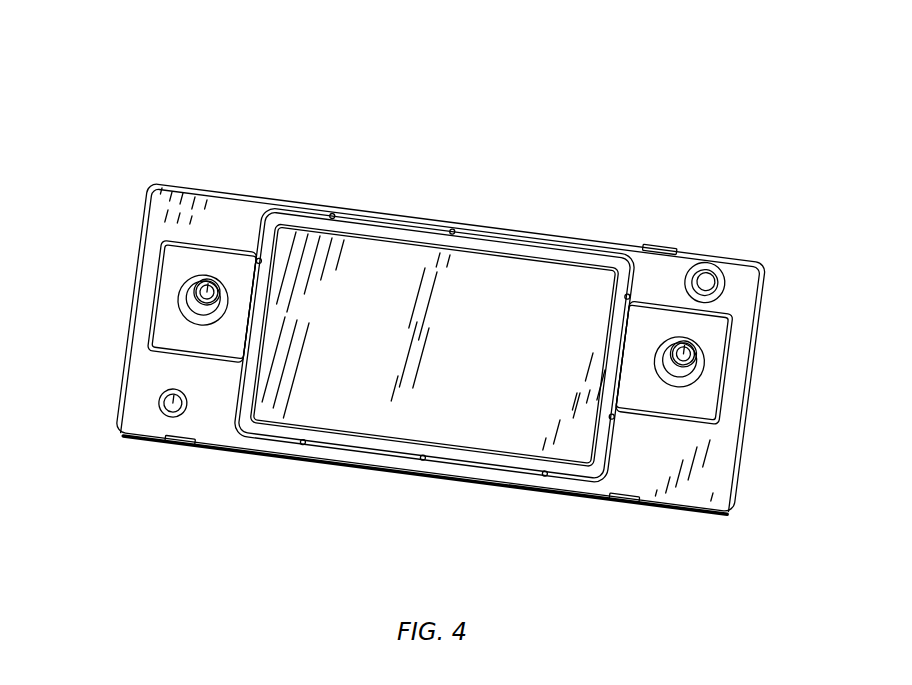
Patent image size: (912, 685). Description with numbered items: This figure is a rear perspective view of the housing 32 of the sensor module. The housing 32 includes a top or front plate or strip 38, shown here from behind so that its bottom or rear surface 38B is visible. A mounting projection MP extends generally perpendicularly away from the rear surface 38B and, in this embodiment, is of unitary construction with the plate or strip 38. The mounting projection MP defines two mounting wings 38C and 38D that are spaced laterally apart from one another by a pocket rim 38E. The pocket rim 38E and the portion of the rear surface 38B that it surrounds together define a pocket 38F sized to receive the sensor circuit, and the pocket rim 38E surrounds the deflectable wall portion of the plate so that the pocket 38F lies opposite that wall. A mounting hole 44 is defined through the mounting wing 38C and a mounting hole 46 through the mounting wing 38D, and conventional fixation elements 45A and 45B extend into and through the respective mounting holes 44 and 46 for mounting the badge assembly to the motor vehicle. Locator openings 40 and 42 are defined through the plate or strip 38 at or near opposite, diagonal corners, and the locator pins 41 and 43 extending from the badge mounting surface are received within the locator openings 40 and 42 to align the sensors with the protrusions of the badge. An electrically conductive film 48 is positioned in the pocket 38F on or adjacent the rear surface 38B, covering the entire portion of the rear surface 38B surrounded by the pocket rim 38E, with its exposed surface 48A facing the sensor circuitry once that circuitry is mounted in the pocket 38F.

The housing 32 is at (100, 118).
The top or front plate or strip 38 is at (213, 195).
The rear surface 38B is at (228, 222).
The mounting wing 38C is at (670, 400).
The mounting wing 38D is at (193, 255).
The pocket rim 38E is at (620, 438).
The pocket 38F is at (500, 243).
The mounting projection MP is at (320, 203).
The locator opening 40 is at (723, 277).
The locator pin 41 is at (705, 272).
The locator opening 42 is at (158, 407).
The locator pin 43 is at (177, 413).
The mounting hole 44 is at (698, 393).
The fixation element 45A is at (690, 362).
The fixation element 45B is at (207, 292).
The mounting hole 46 is at (180, 312).
The electrically conductive film 48 is at (352, 402).
The exposed surface 48A is at (447, 388).